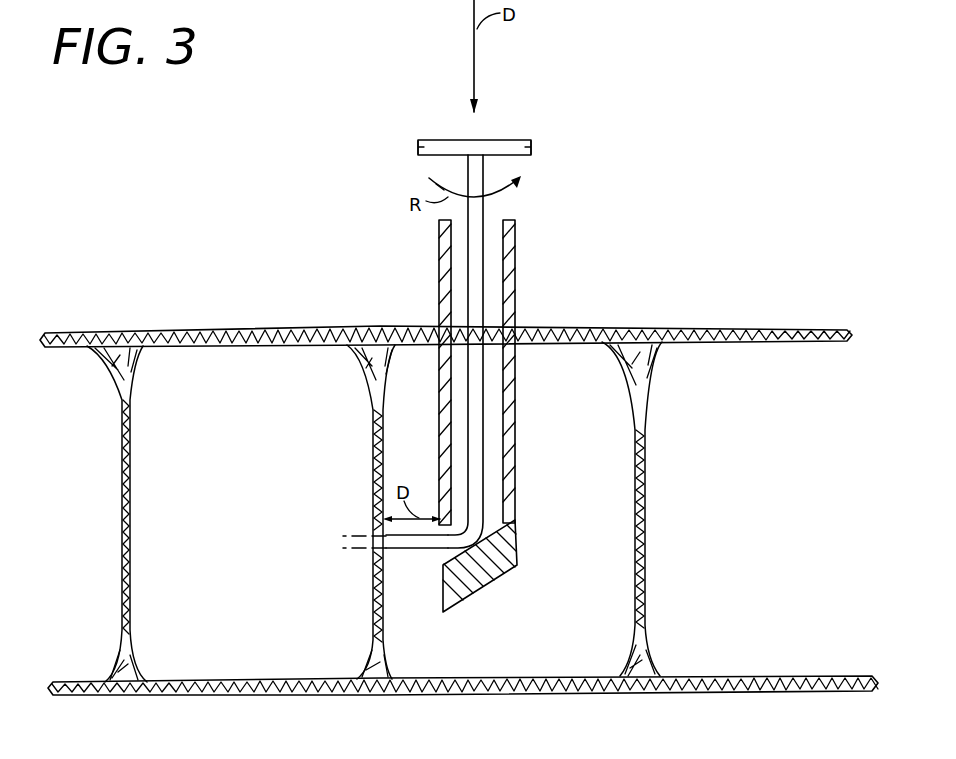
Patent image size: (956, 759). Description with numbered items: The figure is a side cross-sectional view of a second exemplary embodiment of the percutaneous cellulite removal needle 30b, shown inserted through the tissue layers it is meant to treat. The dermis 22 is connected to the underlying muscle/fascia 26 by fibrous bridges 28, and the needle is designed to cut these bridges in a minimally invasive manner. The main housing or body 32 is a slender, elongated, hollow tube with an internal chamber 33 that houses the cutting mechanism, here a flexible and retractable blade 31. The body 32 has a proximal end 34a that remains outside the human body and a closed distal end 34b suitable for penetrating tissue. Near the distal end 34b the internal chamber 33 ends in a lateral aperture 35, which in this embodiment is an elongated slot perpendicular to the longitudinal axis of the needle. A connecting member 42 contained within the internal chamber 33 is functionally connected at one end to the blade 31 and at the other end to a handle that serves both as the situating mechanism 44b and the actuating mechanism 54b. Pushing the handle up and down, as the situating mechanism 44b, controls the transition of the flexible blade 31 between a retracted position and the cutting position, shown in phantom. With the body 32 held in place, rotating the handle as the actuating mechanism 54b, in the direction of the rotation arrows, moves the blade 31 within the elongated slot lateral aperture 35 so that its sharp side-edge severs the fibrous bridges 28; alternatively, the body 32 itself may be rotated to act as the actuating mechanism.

The dermis 22 is at (747, 329).
The muscle/fascia 26 is at (760, 691).
The fibrous bridges 28 is at (125, 558).
The percutaneous cellulite removal needle 30b is at (593, 297).
The flexible blade 31 is at (346, 541).
The body 32 is at (515, 283).
The internal chamber 33 is at (460, 290).
The proximal end 34a is at (474, 140).
The distal end 34b is at (443, 612).
The lateral aperture 35 is at (446, 553).
The connecting member 42 is at (490, 380).
The situating mechanism 44b is at (532, 148).
The actuating mechanism 54b is at (420, 149).